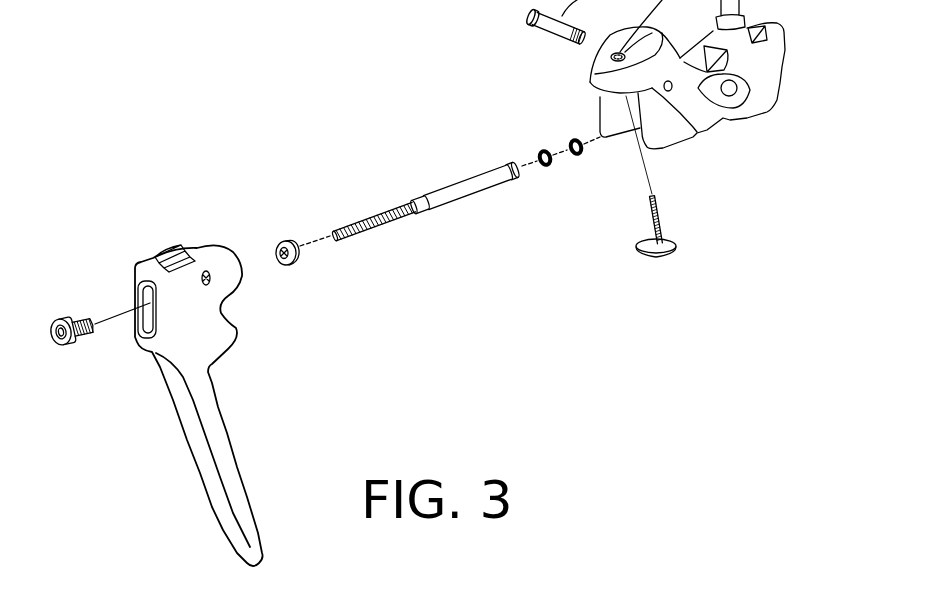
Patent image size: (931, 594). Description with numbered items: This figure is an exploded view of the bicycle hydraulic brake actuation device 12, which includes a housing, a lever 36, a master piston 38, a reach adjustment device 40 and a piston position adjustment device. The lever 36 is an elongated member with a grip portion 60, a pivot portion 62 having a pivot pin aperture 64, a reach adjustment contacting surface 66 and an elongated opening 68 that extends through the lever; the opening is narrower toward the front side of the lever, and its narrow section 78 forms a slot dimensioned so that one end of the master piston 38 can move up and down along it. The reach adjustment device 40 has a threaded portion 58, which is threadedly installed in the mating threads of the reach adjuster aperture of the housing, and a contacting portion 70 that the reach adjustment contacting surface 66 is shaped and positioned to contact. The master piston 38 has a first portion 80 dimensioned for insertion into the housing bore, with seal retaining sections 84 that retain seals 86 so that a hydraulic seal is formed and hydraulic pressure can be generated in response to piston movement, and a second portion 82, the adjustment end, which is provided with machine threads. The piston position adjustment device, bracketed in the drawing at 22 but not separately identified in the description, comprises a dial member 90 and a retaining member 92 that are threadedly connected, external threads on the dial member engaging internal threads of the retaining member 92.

The hydraulic brake actuation device 12 is at (271, 62).
The lever unit 22 is at (148, 188).
The lever 36 is at (220, 410).
The master piston 38 is at (418, 200).
The reach adjustment device 40 is at (723, 173).
The threaded portion 58 is at (658, 210).
The grip portion 60 is at (225, 481).
The pivot portion 62 is at (234, 268).
The pivot pin aperture 64 is at (211, 272).
The reach adjustment contacting surface 66 is at (182, 250).
The elongated opening 68 is at (140, 340).
The narrow section 78 is at (147, 309).
The contacting portion 70 is at (682, 241).
The first portion 80 is at (478, 193).
The second portion 82 is at (386, 222).
The seal retaining sections 84 is at (497, 165).
The seals 86 is at (578, 137).
The dial member 90 is at (73, 313).
The retaining member 92 is at (284, 240).